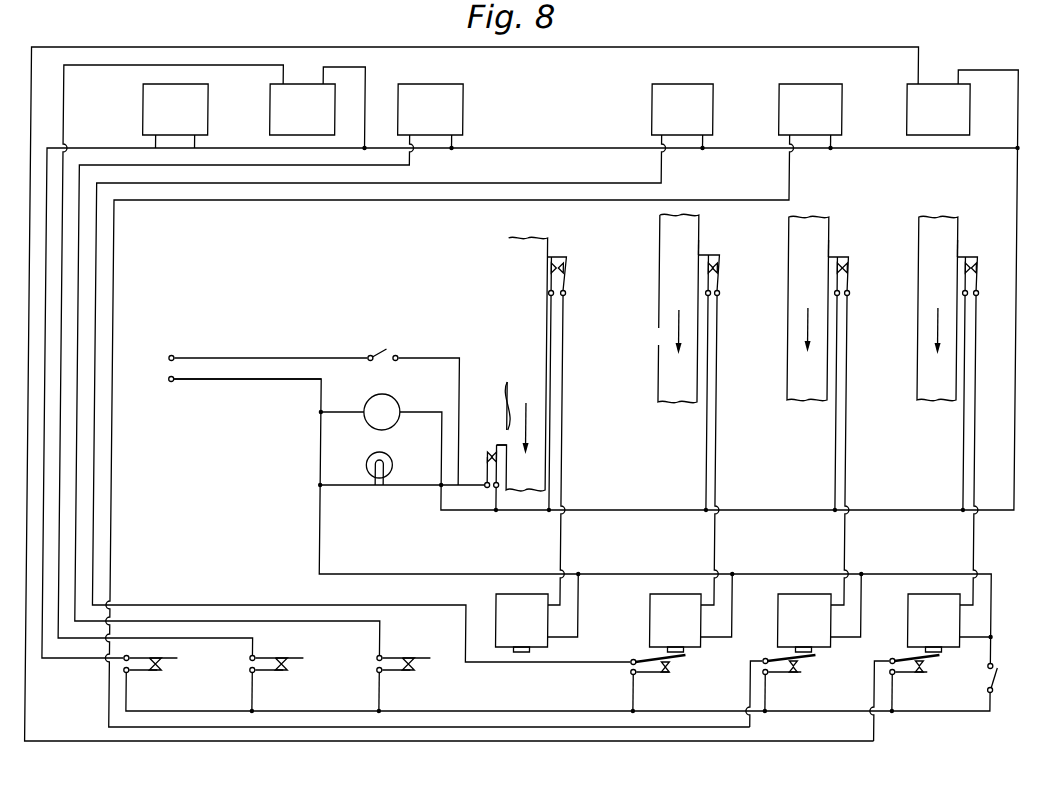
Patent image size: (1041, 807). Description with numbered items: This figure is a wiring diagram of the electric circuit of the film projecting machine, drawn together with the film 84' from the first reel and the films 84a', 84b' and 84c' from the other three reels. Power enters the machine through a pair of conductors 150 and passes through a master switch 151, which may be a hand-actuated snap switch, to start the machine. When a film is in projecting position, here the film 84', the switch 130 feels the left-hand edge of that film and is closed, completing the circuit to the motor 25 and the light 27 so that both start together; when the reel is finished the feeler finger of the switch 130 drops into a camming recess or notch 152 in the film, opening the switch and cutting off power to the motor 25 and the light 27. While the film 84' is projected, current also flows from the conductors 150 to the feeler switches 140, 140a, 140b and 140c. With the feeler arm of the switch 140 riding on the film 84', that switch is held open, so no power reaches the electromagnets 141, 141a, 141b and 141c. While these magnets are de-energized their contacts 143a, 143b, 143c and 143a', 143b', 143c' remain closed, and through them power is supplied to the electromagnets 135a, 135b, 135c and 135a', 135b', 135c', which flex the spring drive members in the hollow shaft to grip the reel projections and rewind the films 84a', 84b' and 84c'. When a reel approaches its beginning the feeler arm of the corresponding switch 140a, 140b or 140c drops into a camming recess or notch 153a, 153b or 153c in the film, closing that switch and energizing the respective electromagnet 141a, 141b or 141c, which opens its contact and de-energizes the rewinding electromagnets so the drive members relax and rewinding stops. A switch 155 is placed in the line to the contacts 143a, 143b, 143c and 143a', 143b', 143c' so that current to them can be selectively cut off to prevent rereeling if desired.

The electromagnet 135c' is at (202, 114).
The electromagnet 135b' is at (318, 99).
The electromagnet 135a' is at (442, 101).
The electromagnet 135a is at (691, 101).
The electromagnet 135b is at (819, 101).
The electromagnet 135c is at (947, 92).
The film 84' is at (503, 364).
The film 84a' is at (652, 308).
The film 84b' is at (785, 308).
The film 84c' is at (918, 308).
The switch 140 is at (550, 256).
The switch 140a is at (717, 255).
The switch 140b is at (863, 416).
The switch 140c is at (959, 256).
The camming recess or notch 153a is at (698, 237).
The camming recess or notch 153b is at (826, 241).
The camming recess or notch 153c is at (953, 239).
The camming recess or notch 152 is at (506, 383).
The switch 130 is at (504, 444).
The pair of conductors 150 is at (208, 379).
The master switch 151 is at (376, 348).
The motor 25 is at (391, 404).
The light 27 is at (388, 457).
The electromagnet 141 is at (540, 631).
The electromagnet 141a is at (697, 631).
The electromagnet 141b is at (825, 631).
The electromagnet 141c is at (955, 631).
The switch 143a is at (676, 679).
The switch 143b is at (806, 679).
The switch 143c is at (914, 678).
The switch 143a' is at (429, 679).
The switch 143b' is at (299, 679).
The switch 143c' is at (172, 679).
The switch 155 is at (998, 672).